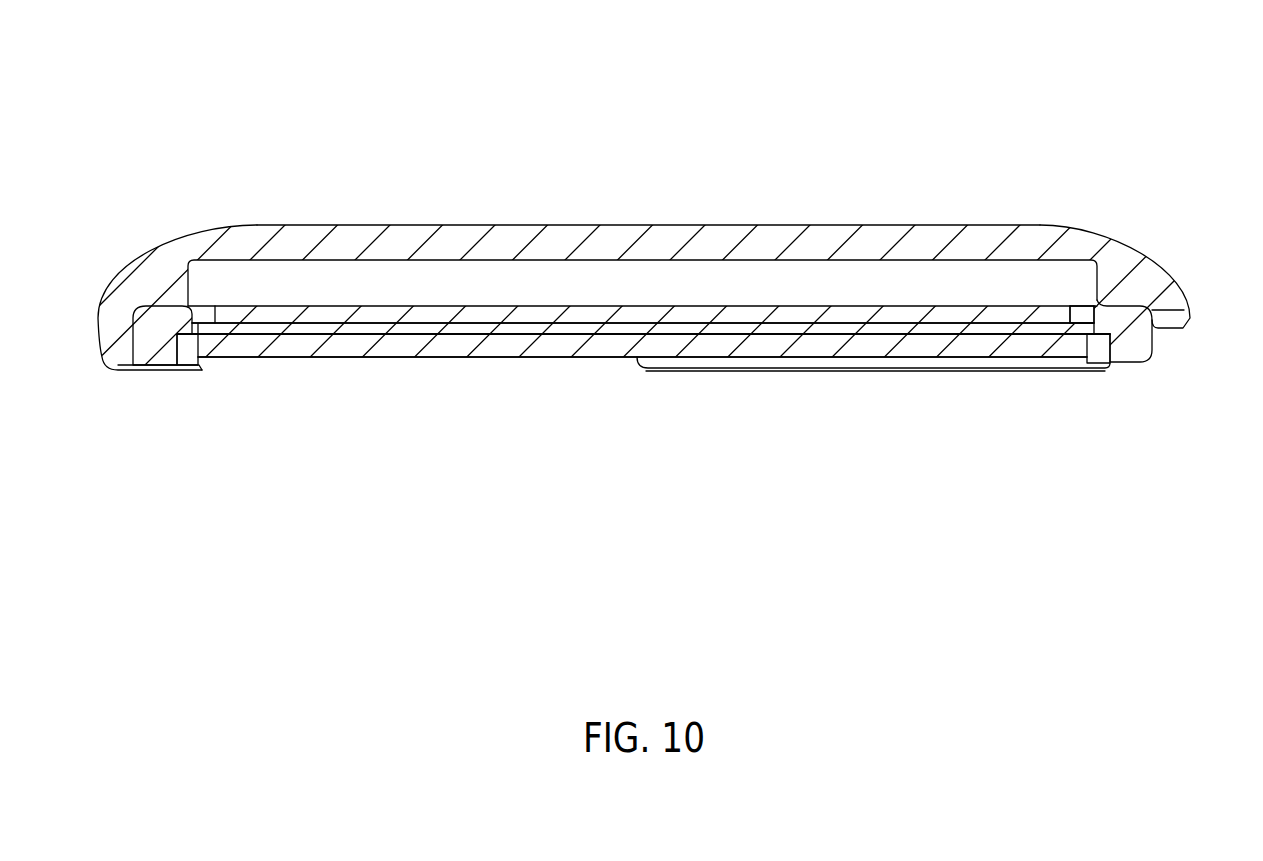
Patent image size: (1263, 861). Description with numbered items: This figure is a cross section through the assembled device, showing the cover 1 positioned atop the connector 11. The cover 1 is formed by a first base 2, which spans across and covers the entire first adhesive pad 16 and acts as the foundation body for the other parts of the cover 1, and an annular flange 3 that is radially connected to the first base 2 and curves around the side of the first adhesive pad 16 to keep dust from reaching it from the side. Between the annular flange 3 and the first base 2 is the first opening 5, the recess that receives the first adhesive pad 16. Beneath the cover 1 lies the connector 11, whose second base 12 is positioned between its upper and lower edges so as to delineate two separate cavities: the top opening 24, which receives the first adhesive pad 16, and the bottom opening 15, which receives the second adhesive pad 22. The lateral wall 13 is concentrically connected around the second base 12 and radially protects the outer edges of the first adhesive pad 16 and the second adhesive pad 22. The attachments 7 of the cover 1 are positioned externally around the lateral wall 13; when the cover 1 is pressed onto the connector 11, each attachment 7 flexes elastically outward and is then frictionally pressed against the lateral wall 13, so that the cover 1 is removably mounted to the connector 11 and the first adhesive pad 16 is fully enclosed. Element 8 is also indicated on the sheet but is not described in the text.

The cover 1 is at (632, 232).
The first base 2 is at (632, 197).
The annular flange 3 is at (119, 278).
The first opening 5 is at (531, 287).
The attachments 7 is at (107, 346).
The top surface 8 is at (873, 5).
The connector 11 is at (651, 359).
The second base 12 is at (614, 328).
The lateral wall 13 is at (1143, 351).
The bottom opening 15 is at (1097, 344).
The first adhesive pad 16 is at (951, 314).
The second adhesive pad 22 is at (455, 347).
The top opening 24 is at (1084, 317).